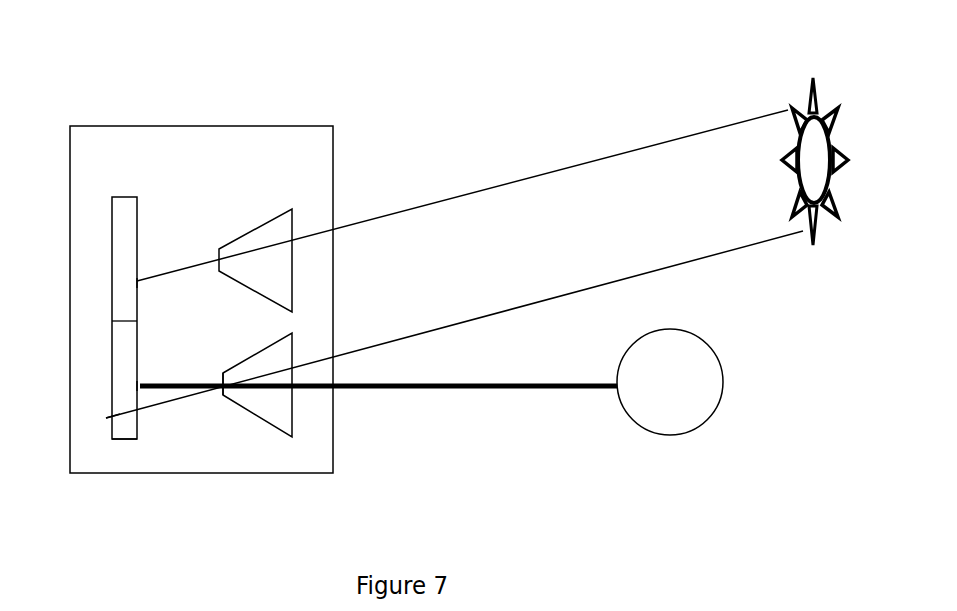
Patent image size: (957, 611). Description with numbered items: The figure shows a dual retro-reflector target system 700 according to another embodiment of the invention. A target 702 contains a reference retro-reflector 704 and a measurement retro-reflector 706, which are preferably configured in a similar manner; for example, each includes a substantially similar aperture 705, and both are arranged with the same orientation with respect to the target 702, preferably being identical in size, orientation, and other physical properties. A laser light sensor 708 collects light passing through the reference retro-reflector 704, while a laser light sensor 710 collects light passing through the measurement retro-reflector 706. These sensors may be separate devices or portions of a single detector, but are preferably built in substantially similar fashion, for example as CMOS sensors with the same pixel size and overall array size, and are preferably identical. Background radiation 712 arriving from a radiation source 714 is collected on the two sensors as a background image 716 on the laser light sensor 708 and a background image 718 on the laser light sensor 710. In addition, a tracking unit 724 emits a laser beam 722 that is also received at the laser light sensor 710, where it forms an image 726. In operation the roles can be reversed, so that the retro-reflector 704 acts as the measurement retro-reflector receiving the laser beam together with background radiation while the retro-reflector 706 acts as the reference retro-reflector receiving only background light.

The dual retro-reflector target system 700 is at (425, 124).
The target 702 is at (143, 126).
The reference retro-reflector 704 is at (265, 228).
The aperture 705 is at (223, 380).
The measurement retro-reflector 706 is at (272, 423).
The laser light sensor 708 is at (110, 197).
The laser light sensor 710 is at (128, 439).
The radiation 712 is at (543, 173).
The radiation source 714 is at (792, 105).
The background image 716 is at (136, 283).
The background image 718 is at (106, 418).
The laser beam 722 is at (473, 388).
The tracking unit 724 is at (713, 415).
The image 726 is at (137, 385).